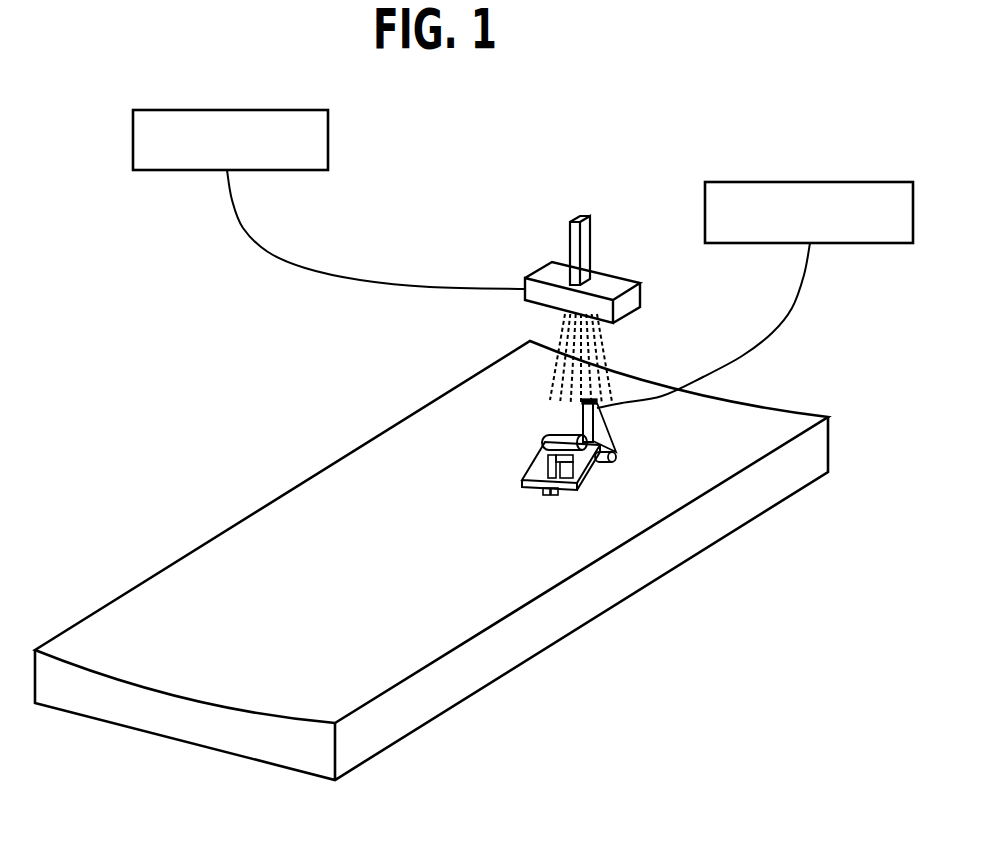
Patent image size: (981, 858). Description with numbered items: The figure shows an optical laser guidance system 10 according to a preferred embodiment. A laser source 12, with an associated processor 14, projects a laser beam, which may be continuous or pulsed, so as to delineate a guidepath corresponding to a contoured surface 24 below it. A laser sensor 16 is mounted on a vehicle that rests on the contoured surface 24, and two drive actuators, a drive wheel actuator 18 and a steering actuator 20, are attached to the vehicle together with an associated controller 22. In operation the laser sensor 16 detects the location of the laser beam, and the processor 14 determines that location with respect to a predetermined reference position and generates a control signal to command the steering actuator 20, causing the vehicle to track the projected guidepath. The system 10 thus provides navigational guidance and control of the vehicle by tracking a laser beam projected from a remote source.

The optical laser guidance system 10 is at (431, 560).
The laser source 12 is at (528, 277).
The processor 14 is at (330, 153).
The laser sensor 16 is at (548, 438).
The drive wheel actuator 18 is at (613, 460).
The steering actuator 20 is at (563, 470).
The controller 22 is at (743, 182).
The contoured surface 24 is at (365, 562).